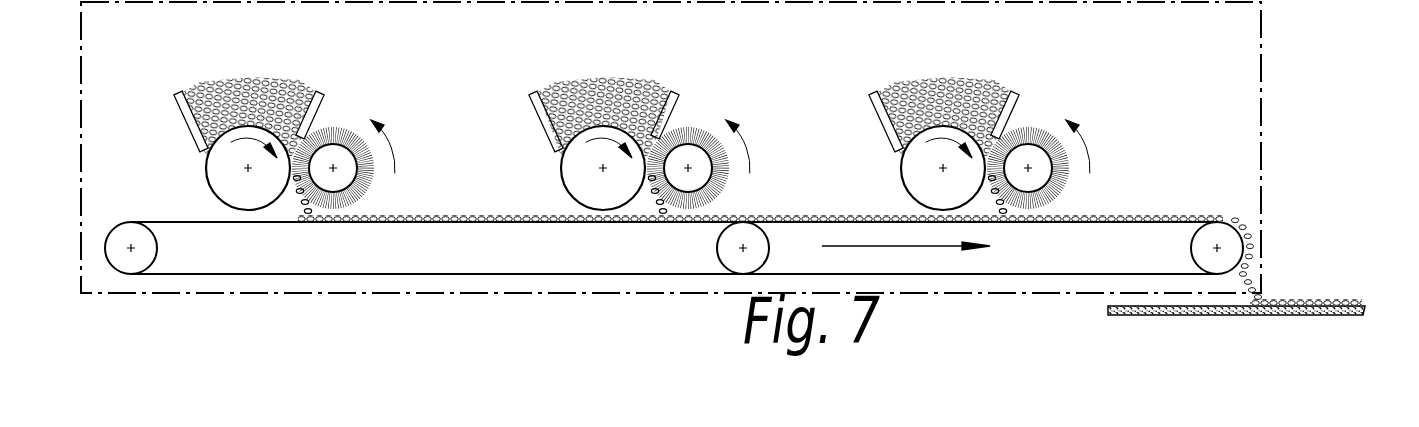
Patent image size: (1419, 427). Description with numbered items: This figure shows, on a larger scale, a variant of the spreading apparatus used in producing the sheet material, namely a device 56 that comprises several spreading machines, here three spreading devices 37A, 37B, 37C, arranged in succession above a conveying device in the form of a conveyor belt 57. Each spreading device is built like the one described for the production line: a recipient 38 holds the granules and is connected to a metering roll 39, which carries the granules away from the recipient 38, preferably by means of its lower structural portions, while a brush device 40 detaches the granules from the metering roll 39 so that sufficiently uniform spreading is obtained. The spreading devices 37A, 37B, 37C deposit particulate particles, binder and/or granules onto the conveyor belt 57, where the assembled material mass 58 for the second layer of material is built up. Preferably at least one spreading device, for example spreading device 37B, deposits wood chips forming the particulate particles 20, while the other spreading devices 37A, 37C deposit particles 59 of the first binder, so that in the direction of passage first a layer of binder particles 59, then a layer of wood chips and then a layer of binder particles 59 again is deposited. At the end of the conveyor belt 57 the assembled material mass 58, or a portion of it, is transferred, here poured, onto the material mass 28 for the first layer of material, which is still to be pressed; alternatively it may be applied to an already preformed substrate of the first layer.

The particulate particles 20 is at (626, 134).
The material mass 28 is at (1193, 315).
The spreading device 37A is at (631, 115).
The spreading device 37B is at (633, 112).
The spreading device 37C is at (1080, 63).
The recipient 38 is at (193, 127).
The metering roll 39 is at (229, 197).
The device for detaching granules 40 is at (340, 182).
The device 56 is at (1261, 120).
The conveyor belt 57 is at (263, 222).
The assembled material mass 58 is at (1192, 218).
The binder particles 59 is at (208, 100).